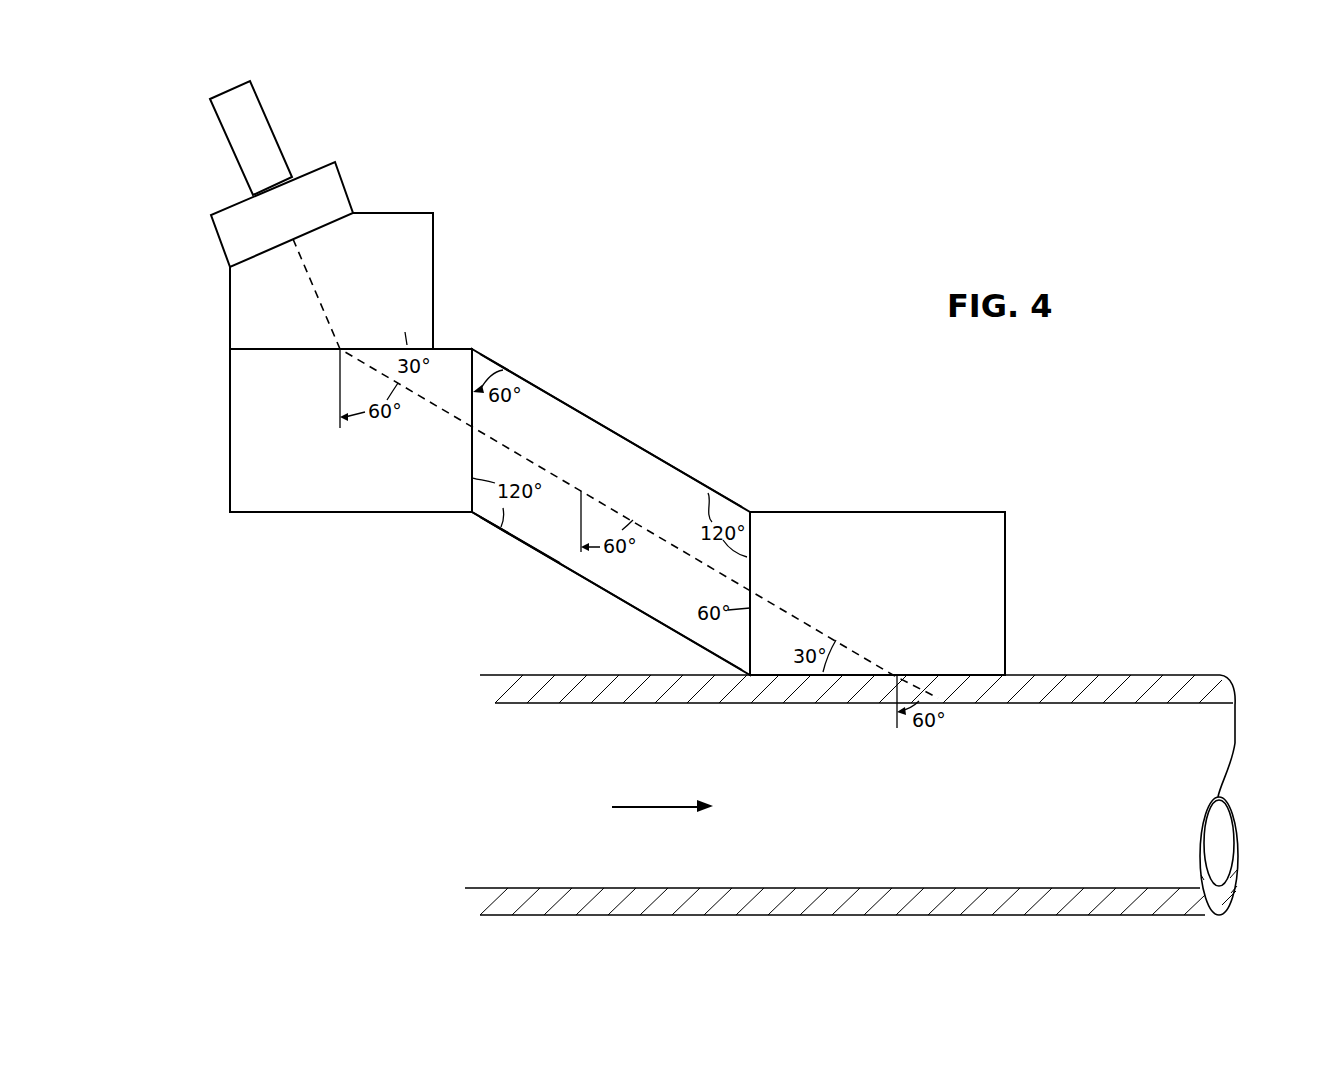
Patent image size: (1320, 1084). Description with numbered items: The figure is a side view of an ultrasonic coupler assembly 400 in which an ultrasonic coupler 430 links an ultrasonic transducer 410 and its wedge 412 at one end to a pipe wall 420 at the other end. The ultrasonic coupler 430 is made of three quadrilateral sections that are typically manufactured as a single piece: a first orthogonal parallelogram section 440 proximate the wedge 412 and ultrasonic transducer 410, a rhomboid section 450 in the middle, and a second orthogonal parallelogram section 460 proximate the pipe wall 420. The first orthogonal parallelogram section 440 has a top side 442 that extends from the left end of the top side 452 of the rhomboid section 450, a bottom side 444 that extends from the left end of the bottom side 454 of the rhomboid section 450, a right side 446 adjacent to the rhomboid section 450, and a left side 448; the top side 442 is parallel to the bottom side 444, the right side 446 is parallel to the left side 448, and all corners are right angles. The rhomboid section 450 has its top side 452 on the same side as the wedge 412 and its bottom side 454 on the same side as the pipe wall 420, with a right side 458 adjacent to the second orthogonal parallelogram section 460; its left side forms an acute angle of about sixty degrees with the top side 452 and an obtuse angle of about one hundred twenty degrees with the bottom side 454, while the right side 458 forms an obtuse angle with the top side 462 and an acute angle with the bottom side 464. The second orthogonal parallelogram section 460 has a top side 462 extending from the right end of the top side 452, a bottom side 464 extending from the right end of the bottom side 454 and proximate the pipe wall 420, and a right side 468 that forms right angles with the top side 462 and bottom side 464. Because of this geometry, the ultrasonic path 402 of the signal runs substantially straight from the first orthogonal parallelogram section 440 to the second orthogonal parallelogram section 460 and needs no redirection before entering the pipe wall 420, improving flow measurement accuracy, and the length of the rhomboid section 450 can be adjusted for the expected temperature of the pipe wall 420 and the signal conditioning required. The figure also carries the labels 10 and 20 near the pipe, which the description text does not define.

The ultrasonic coupler assembly 400 is at (668, 218).
The ultrasonic transducer 410 is at (280, 142).
The wedge 412 is at (433, 247).
The pipe wall 420 is at (1147, 693).
The ultrasonic coupler 430 is at (590, 395).
The first orthogonal parallelogram section 440 is at (392, 473).
The top side 442 is at (288, 350).
The bottom side 444 is at (413, 512).
The right side 446 is at (473, 410).
The left side 448 is at (230, 427).
The rhomboid section 450 is at (635, 573).
The top side 452 is at (540, 390).
The bottom side 454 is at (547, 553).
The right side 458 is at (752, 568).
The second orthogonal parallelogram section 460 is at (813, 537).
The top side 462 is at (840, 512).
The bottom side 464 is at (790, 677).
The right side 468 is at (1005, 583).
The ultrasonic path 402 is at (573, 487).
The flow direction 10 is at (662, 795).
The pipe 20 is at (874, 771).